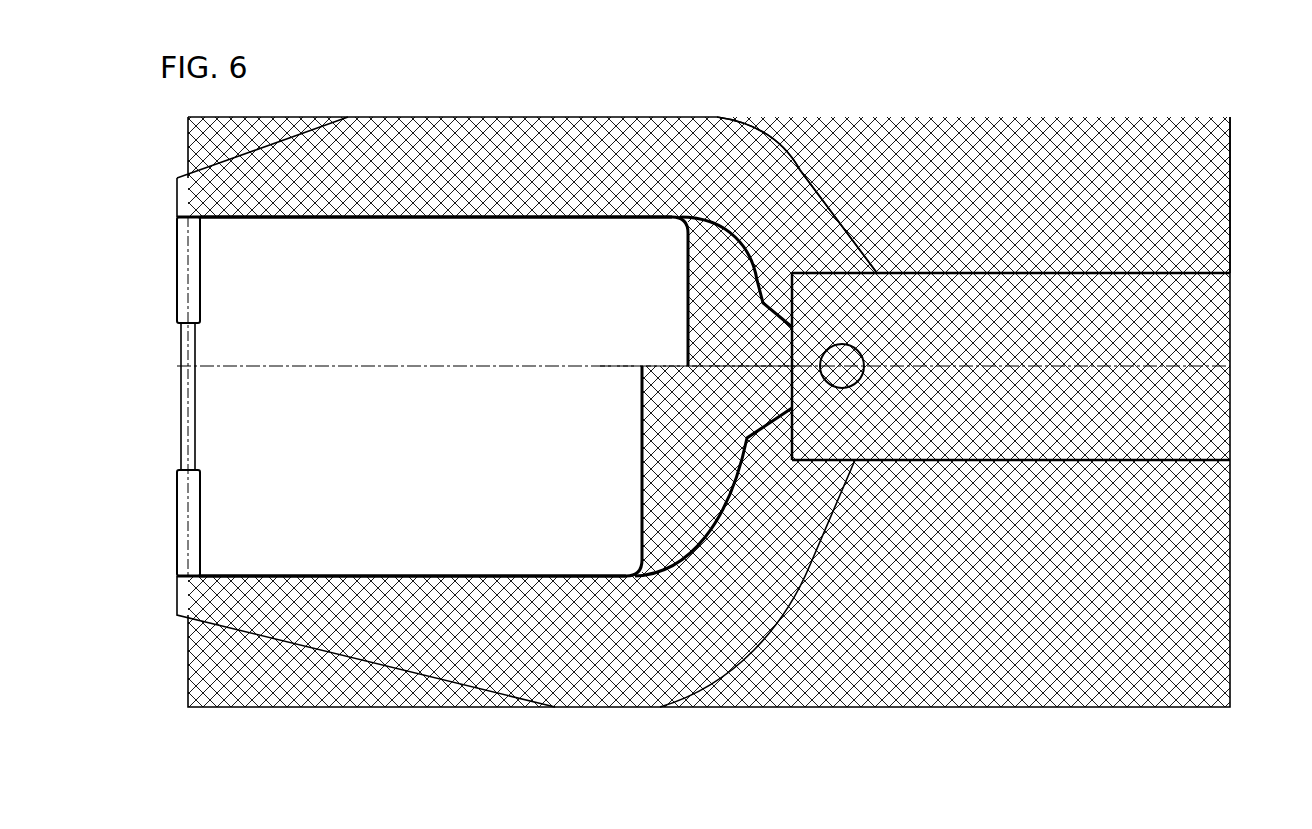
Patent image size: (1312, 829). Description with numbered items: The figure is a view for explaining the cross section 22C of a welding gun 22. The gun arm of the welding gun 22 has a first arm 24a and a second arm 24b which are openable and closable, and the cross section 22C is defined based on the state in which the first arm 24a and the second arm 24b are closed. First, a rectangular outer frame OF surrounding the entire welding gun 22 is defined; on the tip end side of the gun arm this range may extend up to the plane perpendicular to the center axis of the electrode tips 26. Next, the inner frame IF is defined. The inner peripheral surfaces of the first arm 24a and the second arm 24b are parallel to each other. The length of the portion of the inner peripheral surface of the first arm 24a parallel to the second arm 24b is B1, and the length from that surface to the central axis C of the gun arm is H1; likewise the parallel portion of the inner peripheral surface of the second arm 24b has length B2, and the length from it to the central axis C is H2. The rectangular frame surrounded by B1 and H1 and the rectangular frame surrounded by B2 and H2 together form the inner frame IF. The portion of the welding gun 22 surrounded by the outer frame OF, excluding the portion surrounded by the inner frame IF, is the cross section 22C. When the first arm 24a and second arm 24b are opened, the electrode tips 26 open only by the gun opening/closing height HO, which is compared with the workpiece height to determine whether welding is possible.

The welding gun 22 is at (908, 662).
The cross section 22C is at (1078, 690).
The first arm 24a is at (814, 150).
The second arm 24b is at (762, 667).
The electrode tips 26 is at (180, 497).
The outer frame OF is at (1232, 163).
The inner frame IF is at (313, 575).
The central axis C is at (667, 363).
The length H1 is at (430, 357).
The length H2 is at (365, 567).
The gun opening/closing height HO is at (148, 307).
The length B1 is at (204, 297).
The length B2 is at (204, 510).